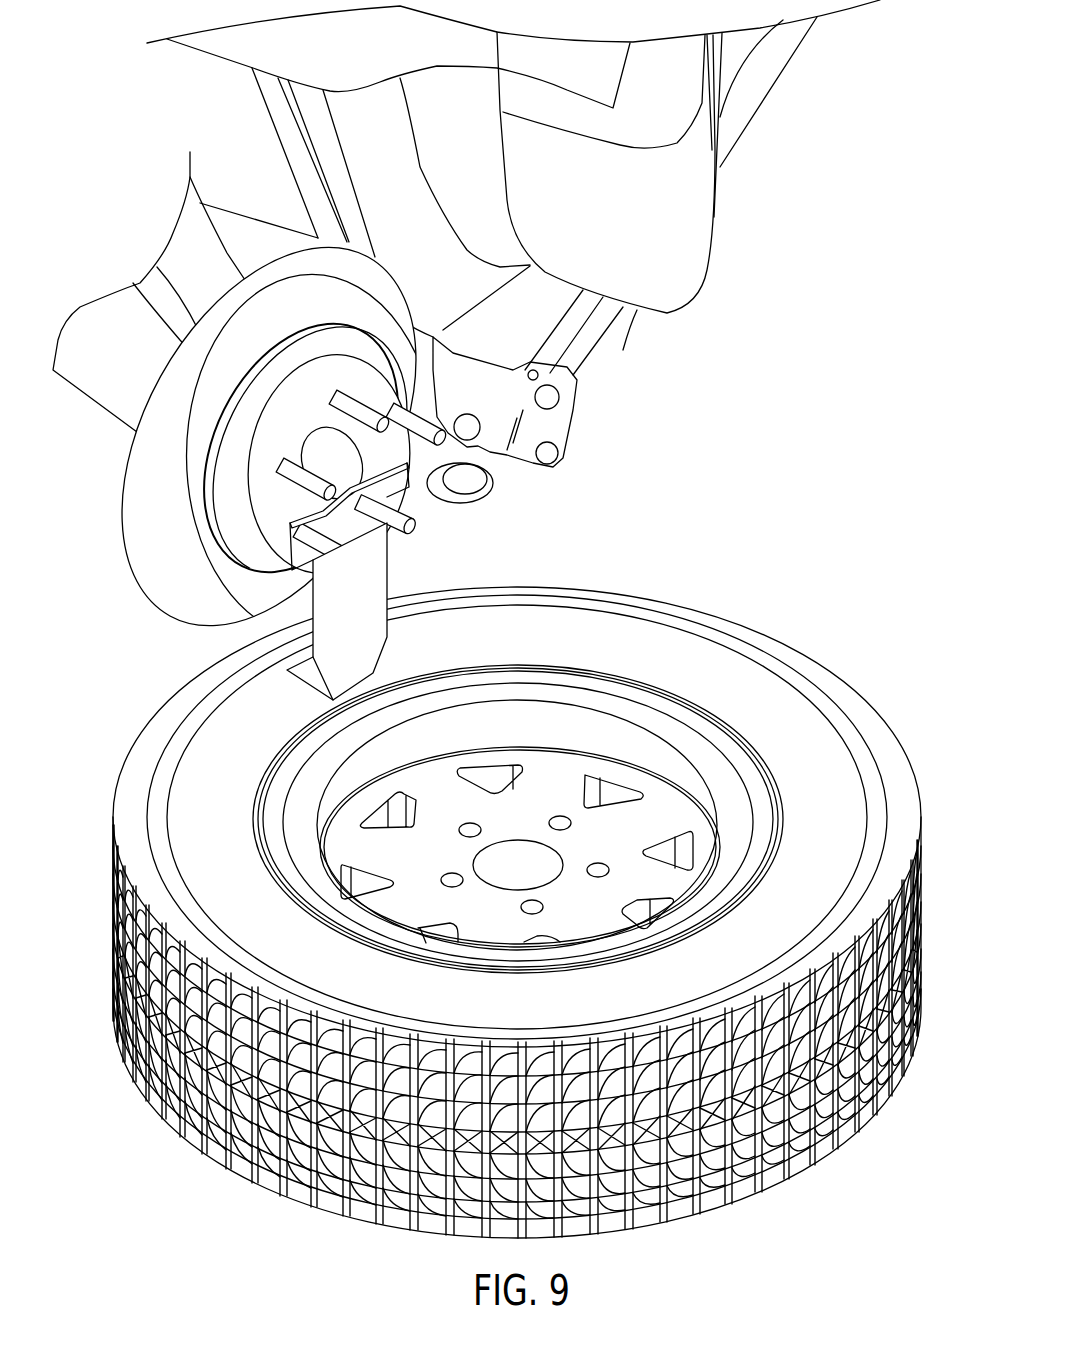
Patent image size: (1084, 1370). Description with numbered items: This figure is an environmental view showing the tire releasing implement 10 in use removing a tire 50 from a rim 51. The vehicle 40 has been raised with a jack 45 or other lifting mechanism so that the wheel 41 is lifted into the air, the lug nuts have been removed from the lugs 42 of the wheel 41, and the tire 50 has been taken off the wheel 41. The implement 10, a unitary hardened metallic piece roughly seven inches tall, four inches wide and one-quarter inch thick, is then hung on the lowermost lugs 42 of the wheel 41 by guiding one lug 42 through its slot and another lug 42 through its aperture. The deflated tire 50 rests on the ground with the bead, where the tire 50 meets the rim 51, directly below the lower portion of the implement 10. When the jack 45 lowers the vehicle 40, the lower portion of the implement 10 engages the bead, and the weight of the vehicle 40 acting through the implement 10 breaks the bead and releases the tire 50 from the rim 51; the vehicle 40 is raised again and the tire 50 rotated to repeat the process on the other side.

The tire releasing implement 10 is at (402, 575).
The vehicle 40 is at (233, 107).
The wheel 41 is at (197, 585).
The lugs 42 is at (327, 542).
The jack 45 is at (593, 387).
The tire 50 is at (873, 710).
The rim 51 is at (660, 740).